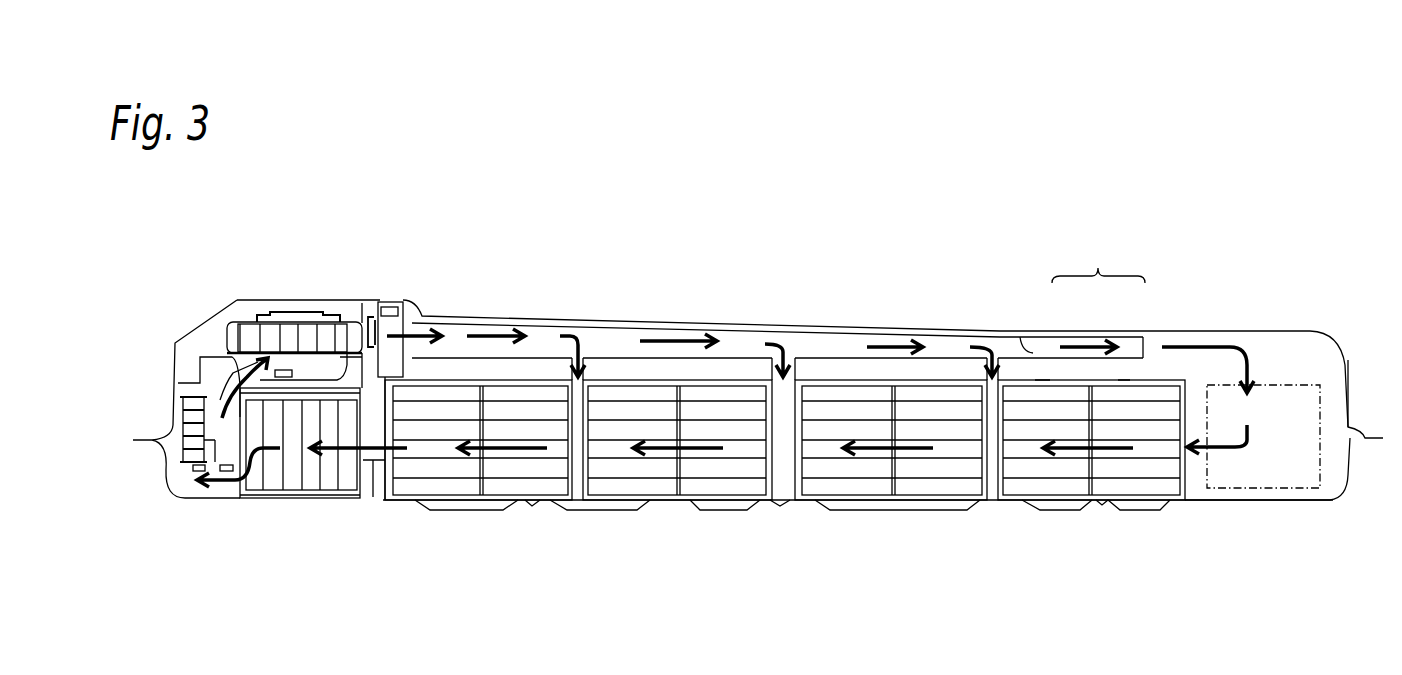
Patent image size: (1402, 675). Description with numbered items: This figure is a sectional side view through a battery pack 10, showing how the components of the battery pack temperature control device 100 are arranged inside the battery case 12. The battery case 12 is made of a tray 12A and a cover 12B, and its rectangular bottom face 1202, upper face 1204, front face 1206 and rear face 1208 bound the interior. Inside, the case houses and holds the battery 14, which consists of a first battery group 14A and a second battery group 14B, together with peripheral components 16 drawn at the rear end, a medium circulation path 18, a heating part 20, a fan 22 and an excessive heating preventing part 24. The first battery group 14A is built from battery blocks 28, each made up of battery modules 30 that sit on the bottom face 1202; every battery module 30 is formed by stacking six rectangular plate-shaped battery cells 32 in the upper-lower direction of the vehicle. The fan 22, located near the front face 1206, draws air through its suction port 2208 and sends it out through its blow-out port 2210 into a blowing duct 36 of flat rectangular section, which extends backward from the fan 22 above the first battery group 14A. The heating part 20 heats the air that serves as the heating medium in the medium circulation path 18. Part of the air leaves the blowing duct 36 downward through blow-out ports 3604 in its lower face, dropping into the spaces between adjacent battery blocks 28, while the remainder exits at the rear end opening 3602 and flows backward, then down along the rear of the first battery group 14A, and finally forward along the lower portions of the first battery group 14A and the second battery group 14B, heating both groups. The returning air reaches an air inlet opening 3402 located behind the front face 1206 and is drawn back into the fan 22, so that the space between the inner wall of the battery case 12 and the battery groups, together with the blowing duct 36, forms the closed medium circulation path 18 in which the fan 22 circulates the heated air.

The battery pack 10 is at (903, 286).
The battery pack temperature control device 100 is at (750, 411).
The battery case 12 is at (758, 400).
The tray 12A is at (913, 513).
The cover 12B is at (828, 327).
The bottom face 1202 is at (690, 512).
The upper face 1204 is at (693, 317).
The front face 1206 is at (172, 350).
The rear face 1208 is at (1347, 400).
The battery 14 is at (691, 486).
The first battery group 14A is at (866, 516).
The second battery group 14B is at (298, 518).
The peripheral components 16 is at (1290, 385).
The medium circulation path 18 is at (1020, 337).
The heating part 20 is at (183, 415).
The fan 22 is at (278, 308).
The suction port 2208 is at (307, 360).
The blow-out port 2210 is at (362, 318).
The excessive heating preventing part 24 is at (280, 325).
The battery block 28 is at (1098, 259).
The battery module 30 is at (1050, 372).
The battery cell 32 is at (348, 478).
The air inlet opening 3402 is at (175, 478).
The blowing duct 36 is at (550, 320).
The rear end opening 3602 is at (1143, 348).
The blow-out ports 3604 is at (585, 345).